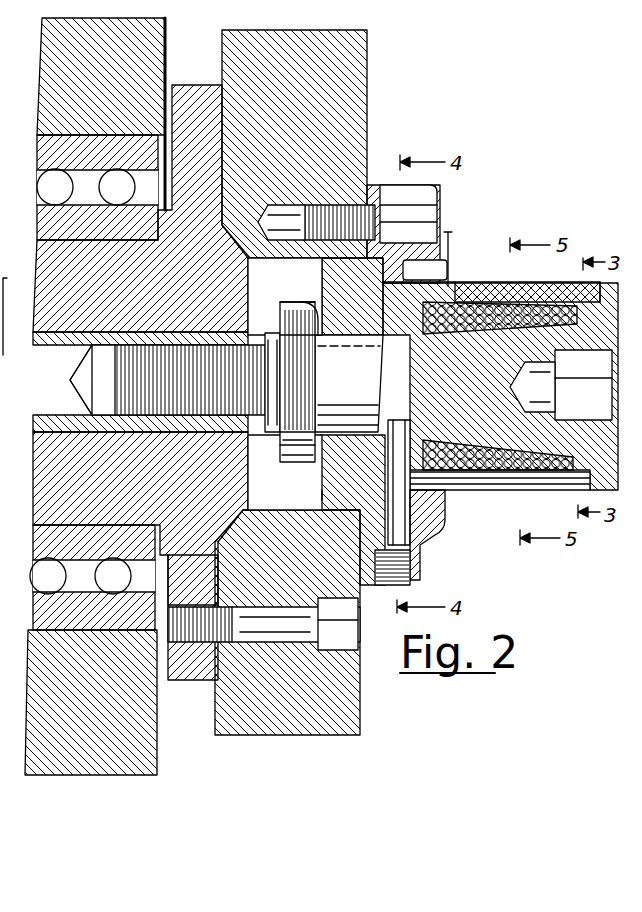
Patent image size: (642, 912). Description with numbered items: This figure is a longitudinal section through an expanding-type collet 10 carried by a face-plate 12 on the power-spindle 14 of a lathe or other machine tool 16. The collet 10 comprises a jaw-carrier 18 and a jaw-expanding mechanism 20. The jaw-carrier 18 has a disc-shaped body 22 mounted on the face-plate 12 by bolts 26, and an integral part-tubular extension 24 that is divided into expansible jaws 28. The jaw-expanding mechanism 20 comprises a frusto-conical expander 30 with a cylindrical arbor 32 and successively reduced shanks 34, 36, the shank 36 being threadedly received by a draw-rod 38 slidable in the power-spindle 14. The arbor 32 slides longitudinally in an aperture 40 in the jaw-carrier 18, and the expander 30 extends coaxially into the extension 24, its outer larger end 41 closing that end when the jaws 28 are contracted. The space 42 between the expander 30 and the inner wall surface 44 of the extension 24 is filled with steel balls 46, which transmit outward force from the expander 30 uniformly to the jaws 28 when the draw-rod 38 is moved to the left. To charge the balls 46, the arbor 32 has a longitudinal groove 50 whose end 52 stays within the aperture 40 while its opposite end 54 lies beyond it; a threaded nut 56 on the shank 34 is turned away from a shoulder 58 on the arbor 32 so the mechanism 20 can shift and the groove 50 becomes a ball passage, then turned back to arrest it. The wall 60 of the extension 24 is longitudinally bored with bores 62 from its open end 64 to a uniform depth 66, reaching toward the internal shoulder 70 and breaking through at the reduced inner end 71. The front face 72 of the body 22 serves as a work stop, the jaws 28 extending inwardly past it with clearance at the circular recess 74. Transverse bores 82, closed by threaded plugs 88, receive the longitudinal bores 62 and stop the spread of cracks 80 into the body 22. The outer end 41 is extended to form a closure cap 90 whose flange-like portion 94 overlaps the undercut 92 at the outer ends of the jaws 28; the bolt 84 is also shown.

The collet 10 is at (491, 240).
The face-plate 12 is at (355, 117).
The power-spindle 14 is at (240, 483).
The machine tool 16 is at (170, 48).
The jaw-carrier 18 is at (451, 233).
The jaw-expanding mechanism 20 is at (485, 472).
The body 22 is at (330, 490).
The part-tubular extension 24 is at (562, 281).
The bolts 26 is at (410, 212).
The jaws 28 is at (514, 300).
The frusto-conical expander 30 is at (572, 361).
The arbor 32 is at (360, 385).
The shank 34 is at (256, 352).
The shank 36 is at (262, 350).
The draw-rod 38 is at (34, 350).
The aperture 40 is at (305, 452).
The outer larger end 41 is at (612, 290).
The space 42 is at (441, 292).
The inner wall surface 44 is at (536, 300).
The steel balls 46 is at (497, 302).
The longitudinal groove 50 is at (425, 270).
The end of groove 52 is at (441, 276).
The opposite end of groove 54 is at (292, 340).
The threaded nut 56 is at (288, 460).
The shoulder 58 is at (310, 318).
The wall 60 is at (526, 300).
The longitudinal bores 62 is at (558, 480).
The open end 64 is at (590, 491).
The uniform depth 66 is at (426, 540).
The internal shoulder 70 is at (488, 300).
The reduced inner end 71 is at (446, 502).
The front face 72 is at (436, 527).
The circular recess 74 is at (449, 270).
The cracks 80 is at (423, 472).
The transverse bores 82 is at (395, 587).
The bolt 84 is at (264, 624).
The threaded plugs 88 is at (405, 590).
The closure cap 90 is at (616, 506).
The undercut 92 is at (595, 282).
The flange-like portion 94 is at (600, 292).